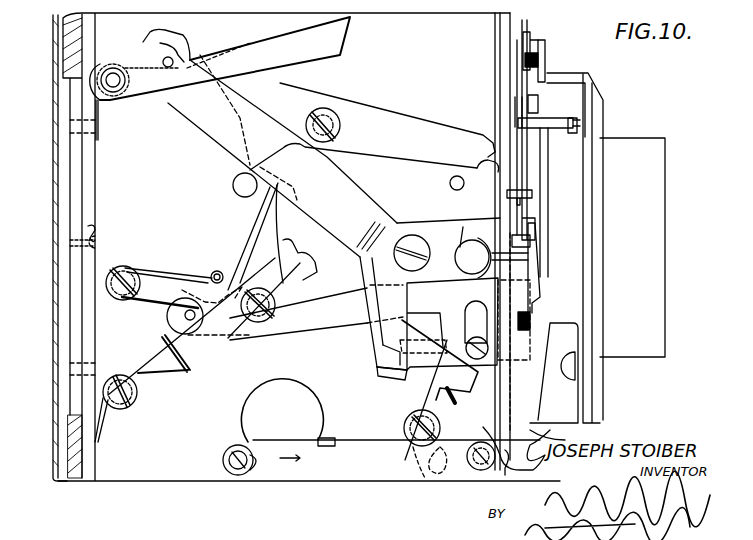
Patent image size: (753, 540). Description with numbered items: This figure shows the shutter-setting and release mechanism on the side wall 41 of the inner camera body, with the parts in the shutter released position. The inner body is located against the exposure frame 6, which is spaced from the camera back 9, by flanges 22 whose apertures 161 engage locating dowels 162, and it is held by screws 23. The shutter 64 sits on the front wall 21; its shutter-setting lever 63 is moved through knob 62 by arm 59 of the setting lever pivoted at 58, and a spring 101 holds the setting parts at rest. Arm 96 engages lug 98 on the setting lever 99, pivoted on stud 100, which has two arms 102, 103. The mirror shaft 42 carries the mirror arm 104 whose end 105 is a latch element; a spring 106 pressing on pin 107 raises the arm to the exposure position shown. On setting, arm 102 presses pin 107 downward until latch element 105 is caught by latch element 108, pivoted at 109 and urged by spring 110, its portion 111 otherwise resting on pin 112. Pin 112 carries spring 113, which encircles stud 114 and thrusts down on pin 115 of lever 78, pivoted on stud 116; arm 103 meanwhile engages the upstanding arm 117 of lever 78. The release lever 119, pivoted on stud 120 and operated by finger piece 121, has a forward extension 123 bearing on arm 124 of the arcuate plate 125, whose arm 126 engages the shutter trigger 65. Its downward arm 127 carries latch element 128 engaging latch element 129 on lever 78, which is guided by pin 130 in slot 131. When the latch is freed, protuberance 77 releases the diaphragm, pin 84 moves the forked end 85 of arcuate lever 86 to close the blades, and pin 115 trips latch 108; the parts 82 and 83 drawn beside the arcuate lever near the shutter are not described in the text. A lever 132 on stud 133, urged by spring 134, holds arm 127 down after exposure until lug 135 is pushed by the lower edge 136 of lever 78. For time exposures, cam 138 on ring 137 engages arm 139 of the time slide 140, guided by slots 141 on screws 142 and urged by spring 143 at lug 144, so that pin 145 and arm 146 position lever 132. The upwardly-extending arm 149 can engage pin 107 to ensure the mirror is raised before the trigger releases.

The exposure frame 6 is at (70, 199).
The camera back 9 is at (53, 57).
The front wall 21 is at (499, 46).
The flanges 22 is at (95, 194).
The screws 23 is at (78, 128).
The wall 41 is at (445, 41).
The shaft 42 is at (114, 93).
The pivot 58 is at (538, 99).
The arm 59 is at (530, 36).
The knob 62 is at (546, 48).
The shutter-setting lever 63 is at (546, 64).
The shutter 64 is at (575, 143).
The shutter trigger 65 is at (578, 128).
The protuberance 77 is at (532, 318).
The lever 78 is at (330, 323).
The rod 82 is at (536, 232).
The bar 83 is at (540, 298).
The pin 84 is at (505, 208).
The forked end 85 is at (530, 215).
The arcuate lever 86 is at (518, 357).
The arm 96 is at (467, 183).
The lug 98 is at (494, 138).
The setting lever 99 is at (375, 108).
The stud 100 is at (326, 142).
The spring 101 is at (499, 76).
The arm 102 is at (183, 38).
The arm 103 is at (234, 185).
The mirror arm 104 is at (276, 45).
The latch element 105 is at (350, 22).
The spring 106 is at (114, 68).
The pin 107 is at (150, 57).
The latch element 108 is at (290, 256).
The pivot 109 is at (128, 402).
The spring 110 is at (165, 372).
The portion 111 is at (188, 297).
The pin 112 is at (217, 270).
The spring 113 is at (190, 272).
The stud 114 is at (118, 302).
The pin 115 is at (170, 320).
The stud 116 is at (263, 325).
The upstanding arm 117 is at (268, 224).
The release lever 119 is at (358, 210).
The stud 120 is at (412, 236).
The finger piece 121 is at (460, 228).
The forward extension 123 is at (479, 251).
The radially-extending arm 124 is at (530, 262).
The arcuate plate 125 is at (542, 166).
The forwardly-extending arm 126 is at (580, 118).
The arm 127 is at (376, 365).
The latch element 128 is at (378, 378).
The latch element 129 is at (440, 318).
The pin 130 is at (470, 338).
The guiding slot 131 is at (477, 305).
The lever 132 is at (410, 372).
The stud 133 is at (404, 428).
The spring 134 is at (430, 395).
The lug 135 is at (455, 395).
The lower edge 136 is at (470, 393).
The ring 137 is at (590, 410).
The cam 138 is at (580, 368).
The arm 139 is at (554, 381).
The time slide 140 is at (340, 475).
The slots 141 is at (255, 472).
The screws 142 is at (233, 475).
The spring 143 is at (316, 405).
The lug 144 is at (330, 438).
The pin 145 is at (440, 472).
The downwardly-extending arm 146 is at (415, 478).
The upwardly-extending arm 149 is at (190, 125).
The apertures 161 is at (92, 232).
The locating dowels 162 is at (101, 246).